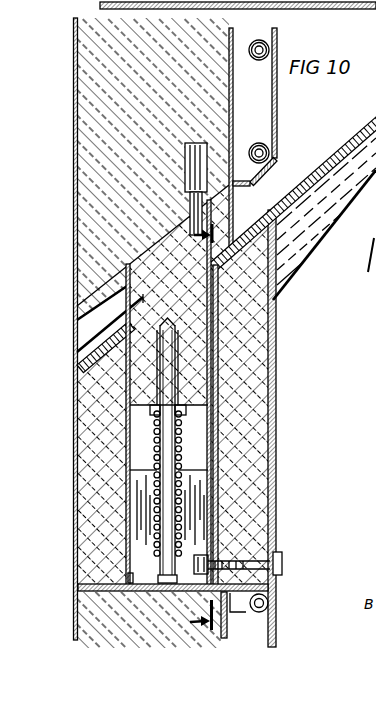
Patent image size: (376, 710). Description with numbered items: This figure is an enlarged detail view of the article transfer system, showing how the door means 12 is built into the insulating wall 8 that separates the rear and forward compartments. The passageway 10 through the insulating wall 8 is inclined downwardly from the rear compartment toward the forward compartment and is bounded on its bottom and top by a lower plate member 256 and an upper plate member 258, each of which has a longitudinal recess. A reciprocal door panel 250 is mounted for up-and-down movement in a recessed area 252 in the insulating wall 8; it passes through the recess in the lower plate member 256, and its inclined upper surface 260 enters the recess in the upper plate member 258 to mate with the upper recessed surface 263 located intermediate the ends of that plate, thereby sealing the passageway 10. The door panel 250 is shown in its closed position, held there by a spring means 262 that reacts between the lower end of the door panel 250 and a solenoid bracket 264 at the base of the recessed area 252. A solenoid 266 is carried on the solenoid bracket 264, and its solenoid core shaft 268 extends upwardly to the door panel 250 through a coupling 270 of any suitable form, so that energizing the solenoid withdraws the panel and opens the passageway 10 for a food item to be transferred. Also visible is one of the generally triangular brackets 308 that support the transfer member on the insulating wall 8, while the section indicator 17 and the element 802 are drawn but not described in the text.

The insulating wall 8 is at (80, 192).
The passageway 10 is at (77, 326).
The door means 12 is at (286, 342).
The section line 17 is at (187, 427).
The reciprocal door panel 250 is at (81, 352).
The recessed area 252 is at (206, 460).
The lower plate member 256 is at (93, 378).
The upper plate member 258 is at (102, 294).
The inclined upper surface 260 is at (169, 228).
The spring means 262 is at (156, 479).
The upper recessed surface 263 is at (143, 255).
The solenoid bracket 264 is at (127, 564).
The solenoid 266 is at (206, 523).
The solenoid core shaft 268 is at (172, 452).
The coupling 270 is at (189, 372).
The triangular bracket 308 is at (364, 250).
The actuator 802 is at (192, 143).